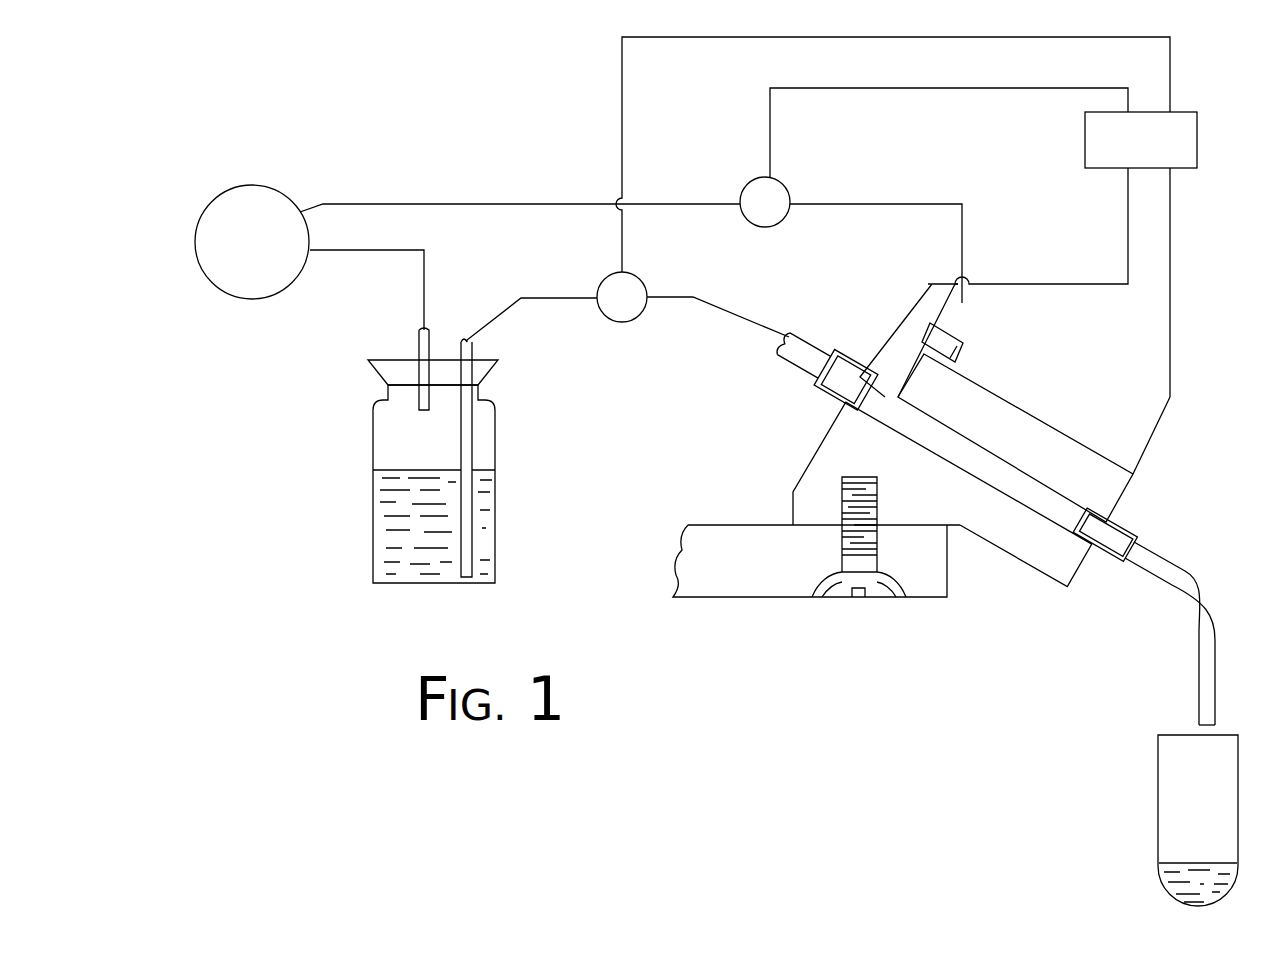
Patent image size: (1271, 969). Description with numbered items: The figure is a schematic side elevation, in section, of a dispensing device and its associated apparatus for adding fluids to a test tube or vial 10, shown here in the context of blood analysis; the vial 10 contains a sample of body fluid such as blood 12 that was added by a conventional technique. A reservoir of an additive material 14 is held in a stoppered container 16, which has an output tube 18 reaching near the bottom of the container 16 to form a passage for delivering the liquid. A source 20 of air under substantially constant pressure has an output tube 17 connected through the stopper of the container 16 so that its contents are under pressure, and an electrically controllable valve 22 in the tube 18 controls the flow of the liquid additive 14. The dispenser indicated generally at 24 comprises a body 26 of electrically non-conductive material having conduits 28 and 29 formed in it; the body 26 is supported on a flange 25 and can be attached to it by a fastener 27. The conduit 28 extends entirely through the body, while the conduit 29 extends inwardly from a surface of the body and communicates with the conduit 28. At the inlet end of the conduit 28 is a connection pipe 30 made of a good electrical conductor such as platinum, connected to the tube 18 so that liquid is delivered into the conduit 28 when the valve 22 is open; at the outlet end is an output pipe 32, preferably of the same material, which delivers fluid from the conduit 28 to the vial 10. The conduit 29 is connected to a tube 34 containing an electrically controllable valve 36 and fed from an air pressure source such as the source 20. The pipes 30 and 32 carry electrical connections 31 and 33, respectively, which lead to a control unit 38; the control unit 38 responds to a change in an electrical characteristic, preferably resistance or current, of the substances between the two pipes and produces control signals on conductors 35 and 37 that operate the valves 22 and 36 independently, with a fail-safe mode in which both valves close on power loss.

The vial 10 is at (1158, 755).
The blood 12 is at (1170, 862).
The additive material 14 is at (412, 468).
The stoppered container 16 is at (373, 492).
The output tube 17 is at (376, 253).
The output tube 18 is at (472, 432).
The source of air 20 is at (248, 186).
The electrically controllable valve 22 is at (622, 322).
The dispenser 24 is at (1036, 372).
The flange 25 is at (733, 598).
The body 26 is at (1008, 553).
The fastener 27 is at (840, 572).
The conduit 28 is at (985, 460).
The conduit 29 is at (942, 378).
The connection pipe 30 is at (860, 370).
The electrical connection 31 is at (920, 307).
The output pipe 32 is at (1170, 558).
The electrical connection 33 is at (1176, 383).
The tube 34 is at (462, 203).
The conductor 35 is at (988, 38).
The electrically controllable valve 36 is at (746, 183).
The conductor 37 is at (855, 90).
The control unit 38 is at (1200, 140).